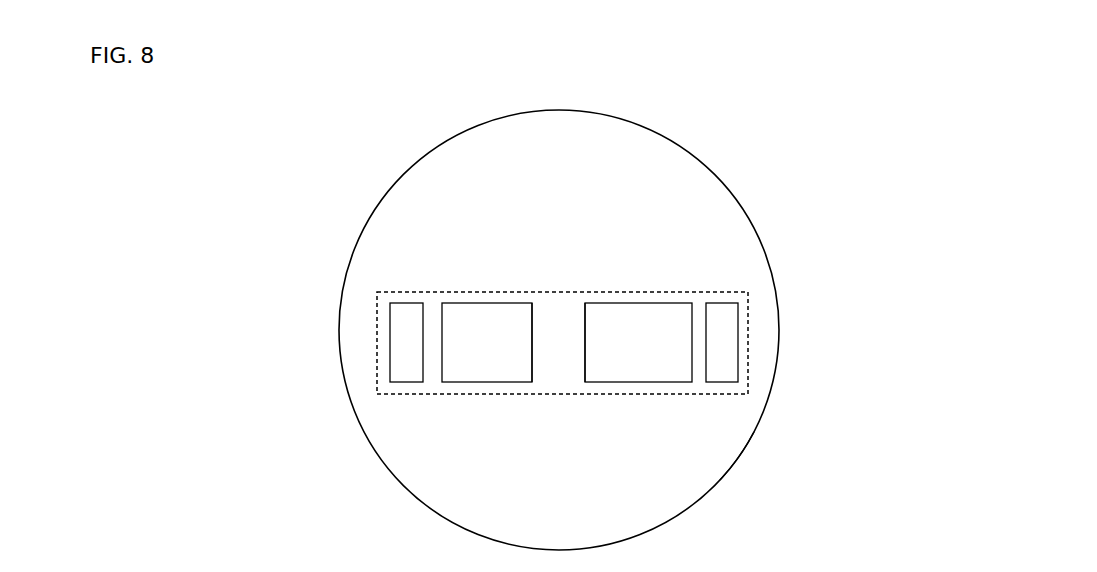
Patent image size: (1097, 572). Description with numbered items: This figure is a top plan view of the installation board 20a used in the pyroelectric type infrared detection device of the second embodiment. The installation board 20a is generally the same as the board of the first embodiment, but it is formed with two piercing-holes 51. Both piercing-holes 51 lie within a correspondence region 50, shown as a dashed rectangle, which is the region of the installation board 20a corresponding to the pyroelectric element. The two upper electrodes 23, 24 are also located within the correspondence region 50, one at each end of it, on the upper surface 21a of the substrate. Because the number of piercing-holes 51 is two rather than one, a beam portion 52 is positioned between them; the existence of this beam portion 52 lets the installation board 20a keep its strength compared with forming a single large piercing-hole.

The installation board 20a is at (855, 149).
The upper surface of base (21u) 21a is at (745, 433).
The upper electrode 23 is at (398, 338).
The upper electrode 24 is at (728, 340).
The correspondence region 50 is at (475, 395).
The piercing-hole 51 is at (497, 320).
The beam portion 52 is at (562, 367).